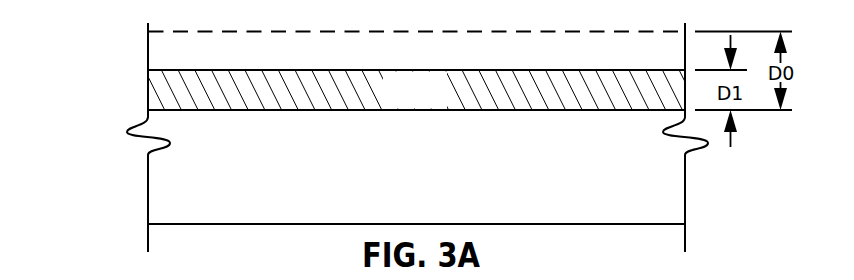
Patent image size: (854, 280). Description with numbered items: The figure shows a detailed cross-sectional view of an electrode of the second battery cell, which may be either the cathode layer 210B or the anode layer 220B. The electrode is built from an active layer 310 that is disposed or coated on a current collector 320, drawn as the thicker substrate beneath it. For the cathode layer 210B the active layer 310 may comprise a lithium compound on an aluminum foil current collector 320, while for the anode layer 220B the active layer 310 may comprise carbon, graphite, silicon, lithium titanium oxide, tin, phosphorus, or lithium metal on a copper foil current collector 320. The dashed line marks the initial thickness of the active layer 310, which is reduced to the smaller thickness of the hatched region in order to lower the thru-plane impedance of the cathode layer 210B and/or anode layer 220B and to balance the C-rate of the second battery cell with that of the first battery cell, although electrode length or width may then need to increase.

The cathode layer 210B is at (82, 42).
The anode layer 220B is at (82, 70).
The active layer 310 is at (398, 100).
The current collector 320 is at (398, 180).